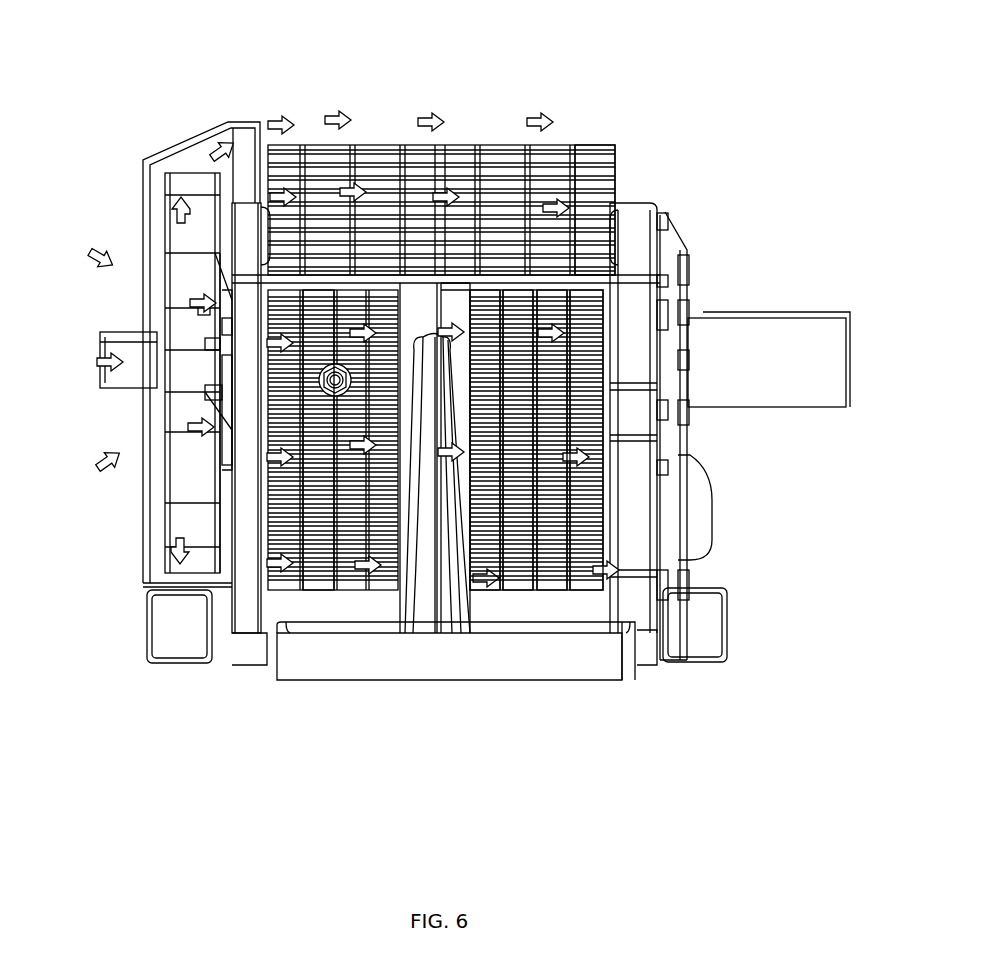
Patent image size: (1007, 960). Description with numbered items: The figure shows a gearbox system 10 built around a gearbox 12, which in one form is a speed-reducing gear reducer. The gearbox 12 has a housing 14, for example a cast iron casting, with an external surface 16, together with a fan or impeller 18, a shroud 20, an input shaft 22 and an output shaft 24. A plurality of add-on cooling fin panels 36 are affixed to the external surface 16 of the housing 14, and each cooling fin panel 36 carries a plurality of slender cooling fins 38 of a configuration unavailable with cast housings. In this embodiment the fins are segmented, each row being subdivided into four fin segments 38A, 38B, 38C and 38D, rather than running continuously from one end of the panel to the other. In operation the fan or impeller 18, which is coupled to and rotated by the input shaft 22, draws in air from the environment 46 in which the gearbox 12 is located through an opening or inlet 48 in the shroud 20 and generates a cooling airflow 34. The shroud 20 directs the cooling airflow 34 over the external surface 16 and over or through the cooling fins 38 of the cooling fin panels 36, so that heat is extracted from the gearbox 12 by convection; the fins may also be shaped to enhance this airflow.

The gearbox system 10 is at (745, 48).
The gearbox 12 is at (640, 203).
The housing 14 is at (245, 686).
The external surface 16 is at (452, 457).
The fan or impeller 18 is at (165, 532).
The shroud 20 is at (226, 122).
The input shaft 22 is at (118, 388).
The output shaft 24 is at (795, 407).
The cooling airflow 34 is at (280, 116).
The cooling fin panel 36 is at (614, 162).
The cooling fins 38 is at (582, 147).
The fin segment 38A is at (490, 590).
The fin segment 38B is at (518, 590).
The fin segment 38C is at (552, 590).
The fin segment 38D is at (588, 590).
The environment 46 is at (250, 180).
The opening or inlet 48 is at (100, 292).